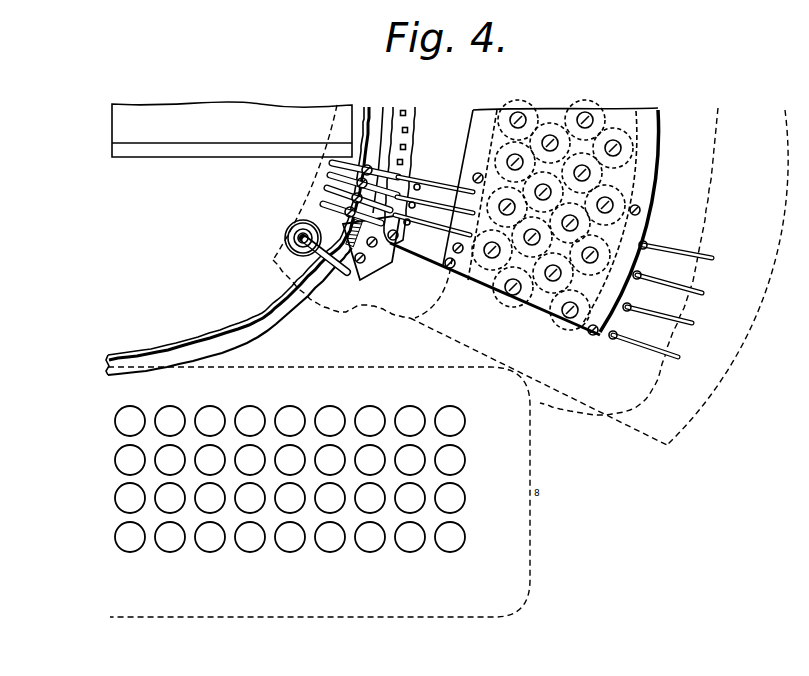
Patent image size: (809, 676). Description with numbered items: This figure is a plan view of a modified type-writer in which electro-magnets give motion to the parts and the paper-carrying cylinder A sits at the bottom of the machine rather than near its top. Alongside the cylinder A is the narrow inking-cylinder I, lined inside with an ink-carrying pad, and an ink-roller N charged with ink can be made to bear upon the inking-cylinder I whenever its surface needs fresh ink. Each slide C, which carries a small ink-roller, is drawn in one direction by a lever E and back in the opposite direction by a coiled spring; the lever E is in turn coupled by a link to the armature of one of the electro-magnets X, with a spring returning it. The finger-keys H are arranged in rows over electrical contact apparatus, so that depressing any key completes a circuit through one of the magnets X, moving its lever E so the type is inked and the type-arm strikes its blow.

The cylinder A is at (232, 129).
The inking-cylinder I is at (250, 318).
The slide C is at (331, 181).
The ink-roller N is at (289, 231).
The lever E is at (668, 246).
The electro-magnets X is at (524, 217).
The finger-keys H is at (290, 479).